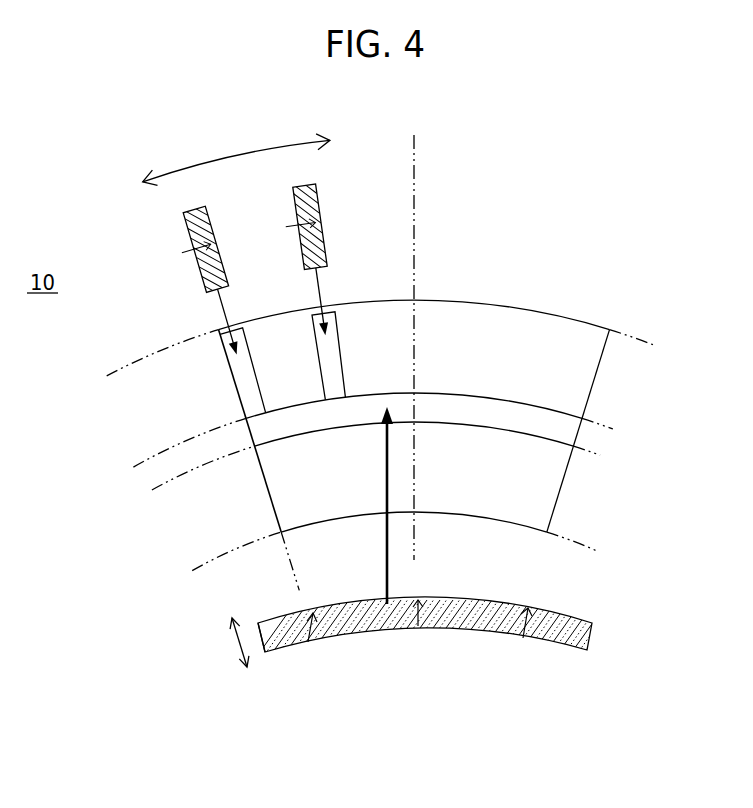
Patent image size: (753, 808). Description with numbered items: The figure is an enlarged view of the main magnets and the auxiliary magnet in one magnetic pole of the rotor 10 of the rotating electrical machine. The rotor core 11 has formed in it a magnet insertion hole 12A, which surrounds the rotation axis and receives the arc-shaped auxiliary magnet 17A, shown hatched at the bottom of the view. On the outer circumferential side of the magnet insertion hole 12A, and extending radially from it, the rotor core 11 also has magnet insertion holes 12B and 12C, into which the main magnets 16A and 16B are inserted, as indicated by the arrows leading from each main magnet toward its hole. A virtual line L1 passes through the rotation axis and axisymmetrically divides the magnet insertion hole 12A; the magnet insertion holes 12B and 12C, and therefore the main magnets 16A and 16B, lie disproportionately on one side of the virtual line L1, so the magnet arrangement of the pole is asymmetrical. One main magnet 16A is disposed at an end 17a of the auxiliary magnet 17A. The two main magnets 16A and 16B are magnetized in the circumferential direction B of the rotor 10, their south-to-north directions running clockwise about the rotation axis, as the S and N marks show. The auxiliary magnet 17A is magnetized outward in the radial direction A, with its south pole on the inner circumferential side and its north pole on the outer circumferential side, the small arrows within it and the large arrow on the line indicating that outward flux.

The rotor 10 is at (545, 298).
The rotor core 11 is at (572, 390).
The magnet insertion hole 12A is at (423, 411).
The magnet insertion hole 12B is at (330, 350).
The magnet insertion hole 12C is at (248, 400).
The main magnet 16A is at (205, 272).
The main magnet 16B is at (313, 250).
The auxiliary magnet 17A is at (573, 633).
The end of the auxiliary magnet 17a is at (266, 648).
The virtual line L1 is at (415, 545).
The radial direction A is at (232, 641).
The circumferential direction B is at (210, 159).